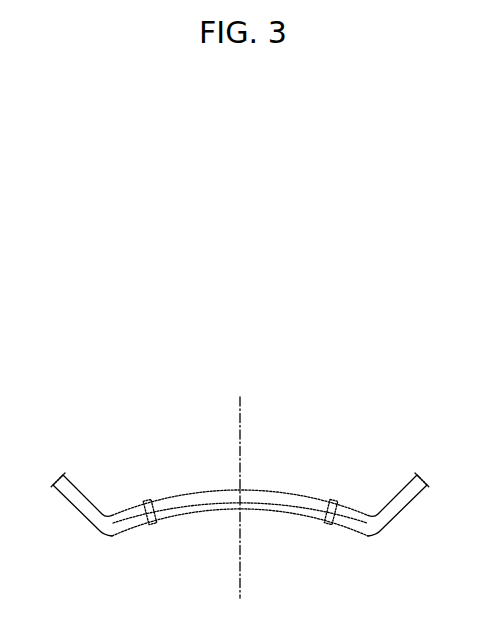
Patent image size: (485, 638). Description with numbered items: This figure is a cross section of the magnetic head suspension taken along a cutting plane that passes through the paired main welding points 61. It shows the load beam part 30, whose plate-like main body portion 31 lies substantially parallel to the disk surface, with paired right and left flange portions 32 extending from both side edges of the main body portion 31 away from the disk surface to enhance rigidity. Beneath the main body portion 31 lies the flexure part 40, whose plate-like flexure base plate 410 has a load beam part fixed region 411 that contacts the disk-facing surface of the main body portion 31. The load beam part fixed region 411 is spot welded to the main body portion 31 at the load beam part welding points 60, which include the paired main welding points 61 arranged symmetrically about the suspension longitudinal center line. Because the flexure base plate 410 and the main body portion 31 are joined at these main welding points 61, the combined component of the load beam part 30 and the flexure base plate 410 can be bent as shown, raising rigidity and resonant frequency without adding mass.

The load beam part 30 is at (251, 504).
The main body portion 31 is at (290, 494).
The flange portions 32 is at (74, 503).
The flexure part 40 is at (208, 524).
The load beam part fixed region 411 is at (240, 547).
The flexure base plate 410 is at (240, 547).
The main welding points 61 is at (240, 534).
The load beam part welding points 60 is at (147, 488).